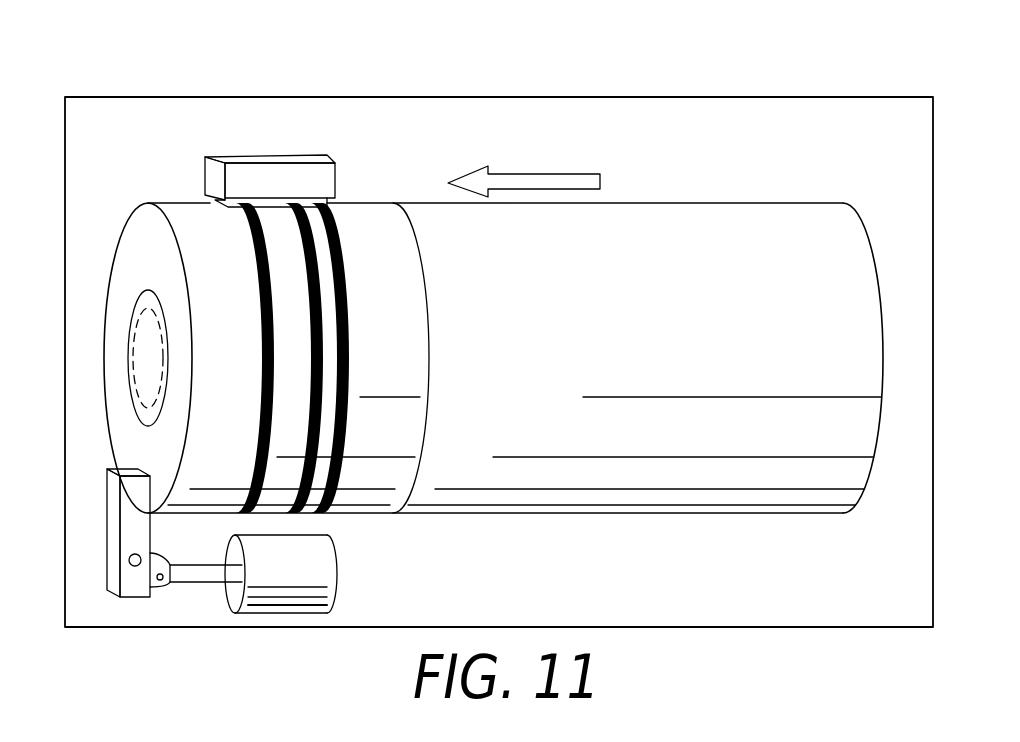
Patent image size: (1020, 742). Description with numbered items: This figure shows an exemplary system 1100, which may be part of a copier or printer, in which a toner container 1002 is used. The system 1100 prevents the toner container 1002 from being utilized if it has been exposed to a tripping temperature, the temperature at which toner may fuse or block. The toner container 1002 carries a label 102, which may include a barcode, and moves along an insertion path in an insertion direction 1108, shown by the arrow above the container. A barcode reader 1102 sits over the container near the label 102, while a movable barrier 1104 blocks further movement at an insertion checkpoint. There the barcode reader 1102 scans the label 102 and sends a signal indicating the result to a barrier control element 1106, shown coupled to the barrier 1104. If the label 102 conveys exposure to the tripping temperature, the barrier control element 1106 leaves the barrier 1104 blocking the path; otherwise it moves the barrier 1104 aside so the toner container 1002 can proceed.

The system 1100 is at (525, 97).
The toner container 1002 is at (710, 203).
The label 102 is at (318, 512).
The barcode reader 1102 is at (283, 156).
The insertion direction 1108 is at (535, 174).
The movable barrier 1104 is at (150, 539).
The barrier control element 1106 is at (337, 576).